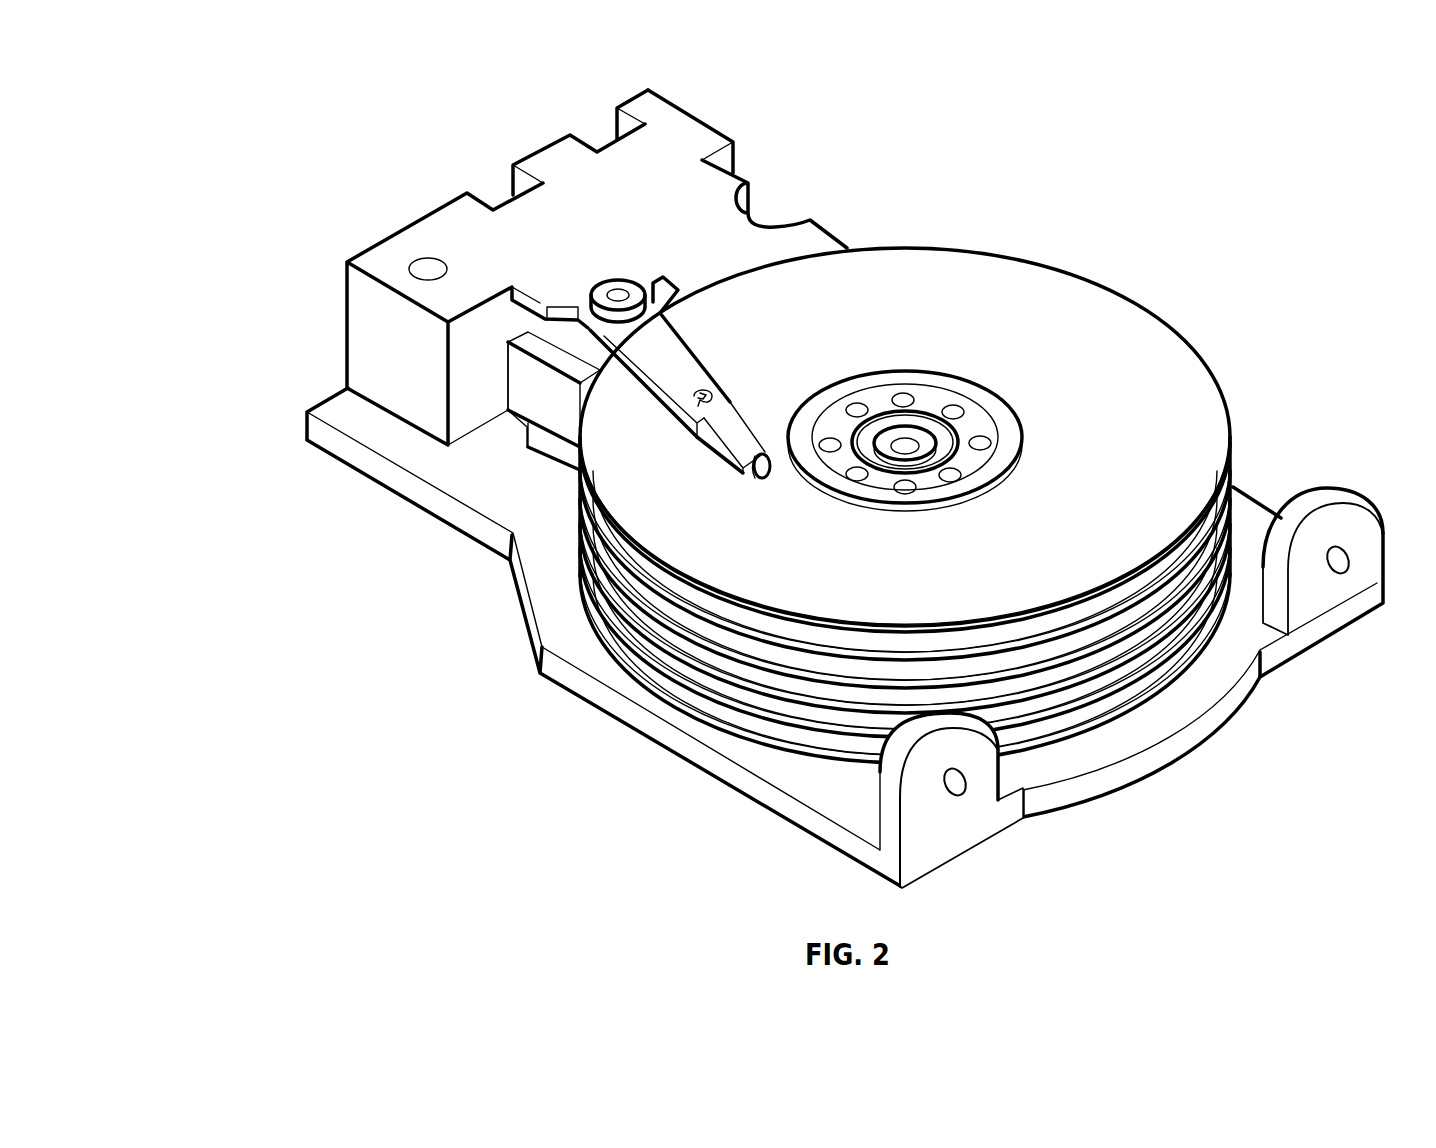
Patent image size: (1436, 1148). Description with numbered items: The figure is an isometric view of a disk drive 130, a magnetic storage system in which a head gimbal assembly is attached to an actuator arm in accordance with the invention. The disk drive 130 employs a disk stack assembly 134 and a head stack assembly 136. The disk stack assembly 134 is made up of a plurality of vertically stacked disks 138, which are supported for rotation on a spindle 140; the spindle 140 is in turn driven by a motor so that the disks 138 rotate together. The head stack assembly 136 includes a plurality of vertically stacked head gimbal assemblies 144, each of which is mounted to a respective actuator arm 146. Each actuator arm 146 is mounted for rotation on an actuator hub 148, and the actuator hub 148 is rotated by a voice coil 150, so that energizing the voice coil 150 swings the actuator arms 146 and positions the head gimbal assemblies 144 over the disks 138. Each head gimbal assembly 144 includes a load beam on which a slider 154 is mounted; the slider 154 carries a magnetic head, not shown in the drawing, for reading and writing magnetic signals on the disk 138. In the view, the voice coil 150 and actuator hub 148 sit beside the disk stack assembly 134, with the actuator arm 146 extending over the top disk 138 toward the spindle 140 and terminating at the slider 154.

The disk drive 130 is at (1272, 320).
The disk stack assembly 134 is at (1095, 287).
The head stack assembly 136 is at (588, 332).
The disks 138 is at (1100, 705).
The spindle 140 is at (908, 440).
The head gimbal assembly 144 is at (745, 422).
The actuator arm 146 is at (703, 362).
The actuator hub 148 is at (617, 292).
The voice coil 150 is at (560, 155).
The slider 154 is at (761, 482).